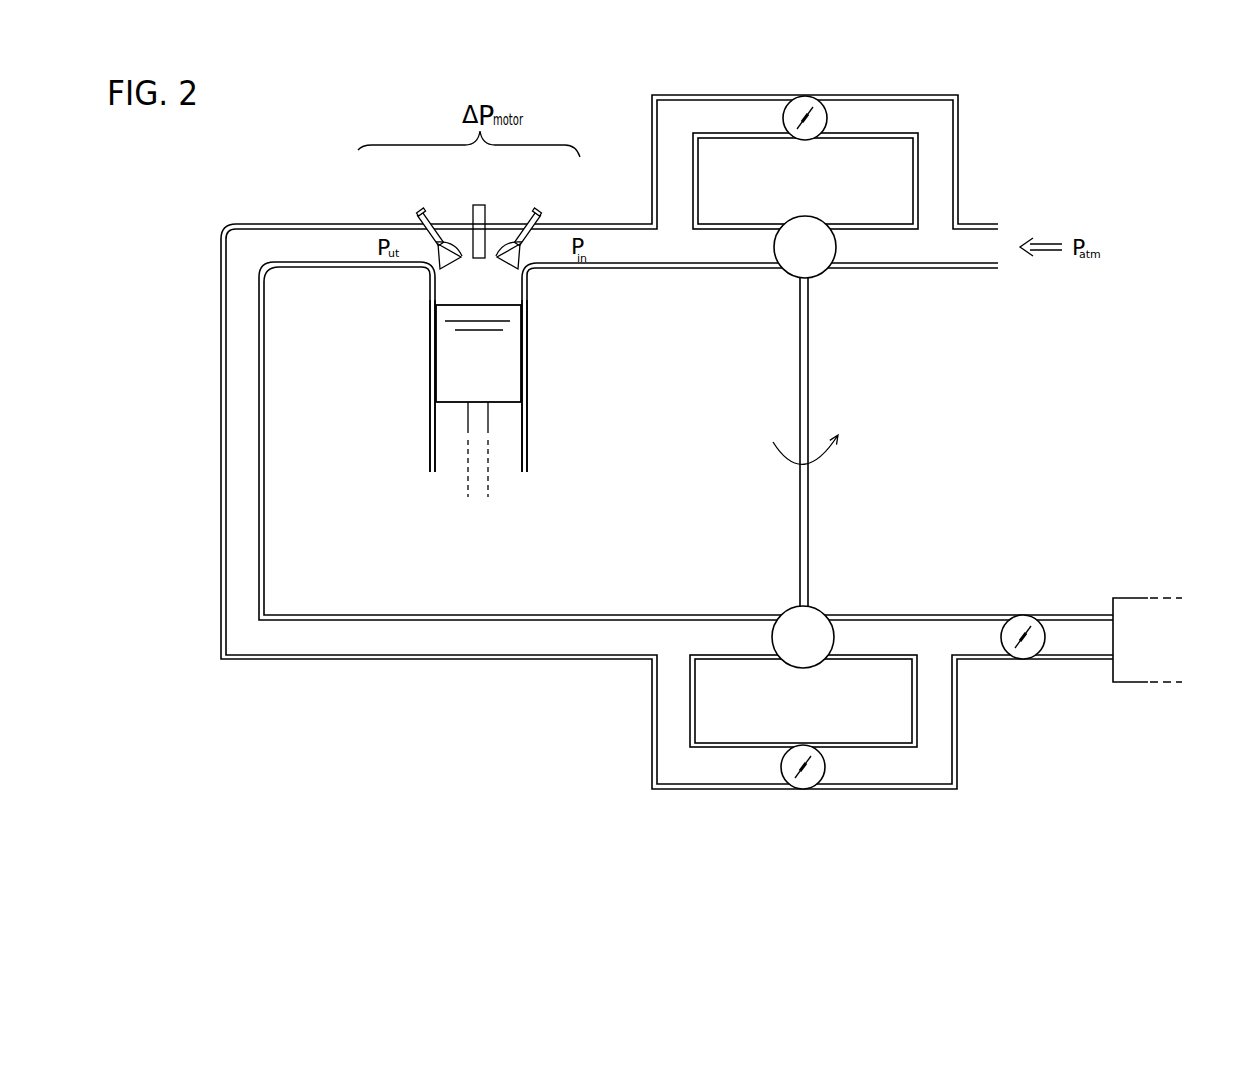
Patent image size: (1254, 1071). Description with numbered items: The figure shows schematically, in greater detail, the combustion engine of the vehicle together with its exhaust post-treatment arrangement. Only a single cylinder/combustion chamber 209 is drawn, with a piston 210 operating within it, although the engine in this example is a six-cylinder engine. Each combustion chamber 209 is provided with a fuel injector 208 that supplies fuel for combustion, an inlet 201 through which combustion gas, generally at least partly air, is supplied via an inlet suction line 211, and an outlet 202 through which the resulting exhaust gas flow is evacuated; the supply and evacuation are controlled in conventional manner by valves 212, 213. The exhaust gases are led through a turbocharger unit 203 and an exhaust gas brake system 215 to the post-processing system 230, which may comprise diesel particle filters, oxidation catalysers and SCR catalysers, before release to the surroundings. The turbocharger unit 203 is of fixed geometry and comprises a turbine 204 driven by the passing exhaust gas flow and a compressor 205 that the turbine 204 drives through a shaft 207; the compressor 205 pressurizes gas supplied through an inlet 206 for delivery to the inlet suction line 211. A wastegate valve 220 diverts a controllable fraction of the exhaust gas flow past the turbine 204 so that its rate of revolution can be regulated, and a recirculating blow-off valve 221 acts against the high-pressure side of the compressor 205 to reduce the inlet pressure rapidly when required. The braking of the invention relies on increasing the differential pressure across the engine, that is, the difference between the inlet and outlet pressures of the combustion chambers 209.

The inlet 201 is at (498, 252).
The outlet 202 is at (441, 242).
The turbocharger unit 203 is at (832, 518).
The turbine 204 is at (812, 623).
The compressor 205 is at (797, 262).
The inlet 206 is at (876, 252).
The shaft 207 is at (808, 487).
The fuel injector 208 is at (485, 258).
The cylinder/combustion chamber 209 is at (447, 292).
The piston 210 is at (450, 392).
The inlet suction line 211 is at (672, 251).
The valve 212 is at (537, 217).
The valve 213 is at (419, 215).
The exhaust gas brake system 215 is at (1033, 648).
The wastegate valve 220 is at (808, 777).
The blow-off valve 221 is at (800, 105).
The post-processing system 230 is at (1132, 598).